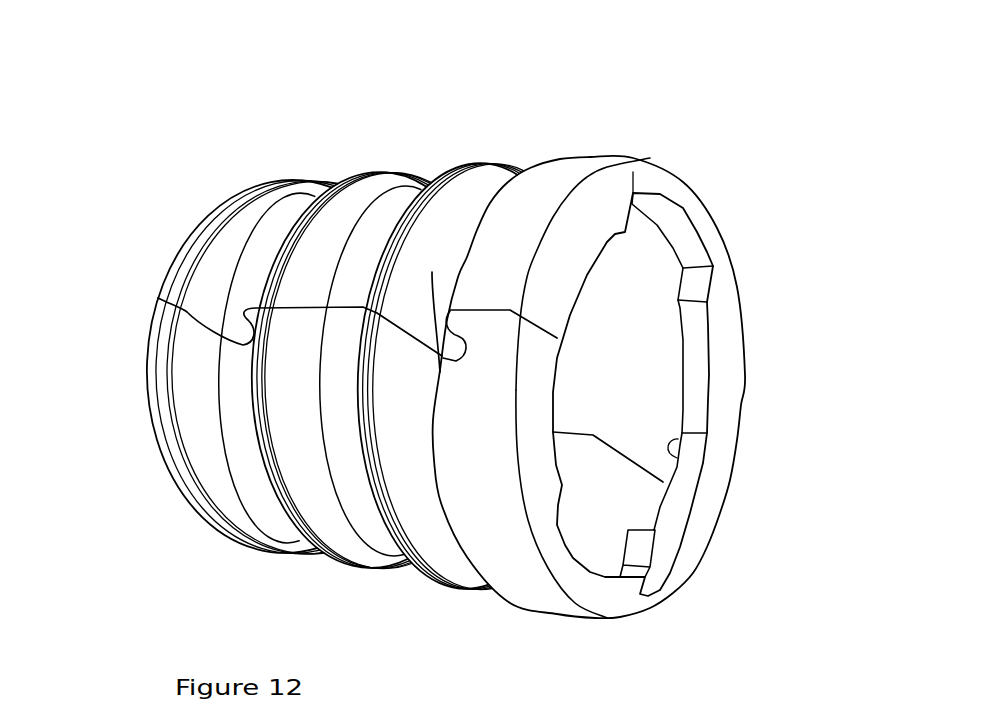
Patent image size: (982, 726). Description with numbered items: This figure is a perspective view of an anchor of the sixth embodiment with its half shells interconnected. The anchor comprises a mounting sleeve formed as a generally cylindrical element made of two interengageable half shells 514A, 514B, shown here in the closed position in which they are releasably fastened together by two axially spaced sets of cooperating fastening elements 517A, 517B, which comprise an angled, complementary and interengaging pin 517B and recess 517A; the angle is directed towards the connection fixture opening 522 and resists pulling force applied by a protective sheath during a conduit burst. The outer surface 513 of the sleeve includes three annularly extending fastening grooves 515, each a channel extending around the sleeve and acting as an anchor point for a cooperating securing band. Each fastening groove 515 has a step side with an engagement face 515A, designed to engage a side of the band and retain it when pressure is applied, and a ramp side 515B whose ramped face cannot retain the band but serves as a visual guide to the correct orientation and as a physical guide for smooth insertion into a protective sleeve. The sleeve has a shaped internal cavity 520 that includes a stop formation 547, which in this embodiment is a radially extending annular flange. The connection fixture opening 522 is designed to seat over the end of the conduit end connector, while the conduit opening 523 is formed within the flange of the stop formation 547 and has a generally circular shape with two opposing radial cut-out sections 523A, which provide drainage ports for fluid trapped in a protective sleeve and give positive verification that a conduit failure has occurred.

The outer surface 513 is at (553, 118).
The half shell 514A is at (566, 175).
The half shell 514B is at (524, 588).
The fastening groove 515 is at (402, 178).
The engagement face 515A is at (272, 190).
The ramp side 515B is at (278, 258).
The recess 517A is at (456, 338).
The pin 517B is at (432, 278).
The internal cavity 520 is at (640, 325).
The connection fixture opening 522 is at (158, 487).
The conduit opening 523 is at (755, 397).
The radial cut-out section 523A is at (687, 243).
The stop formation 547 is at (728, 422).